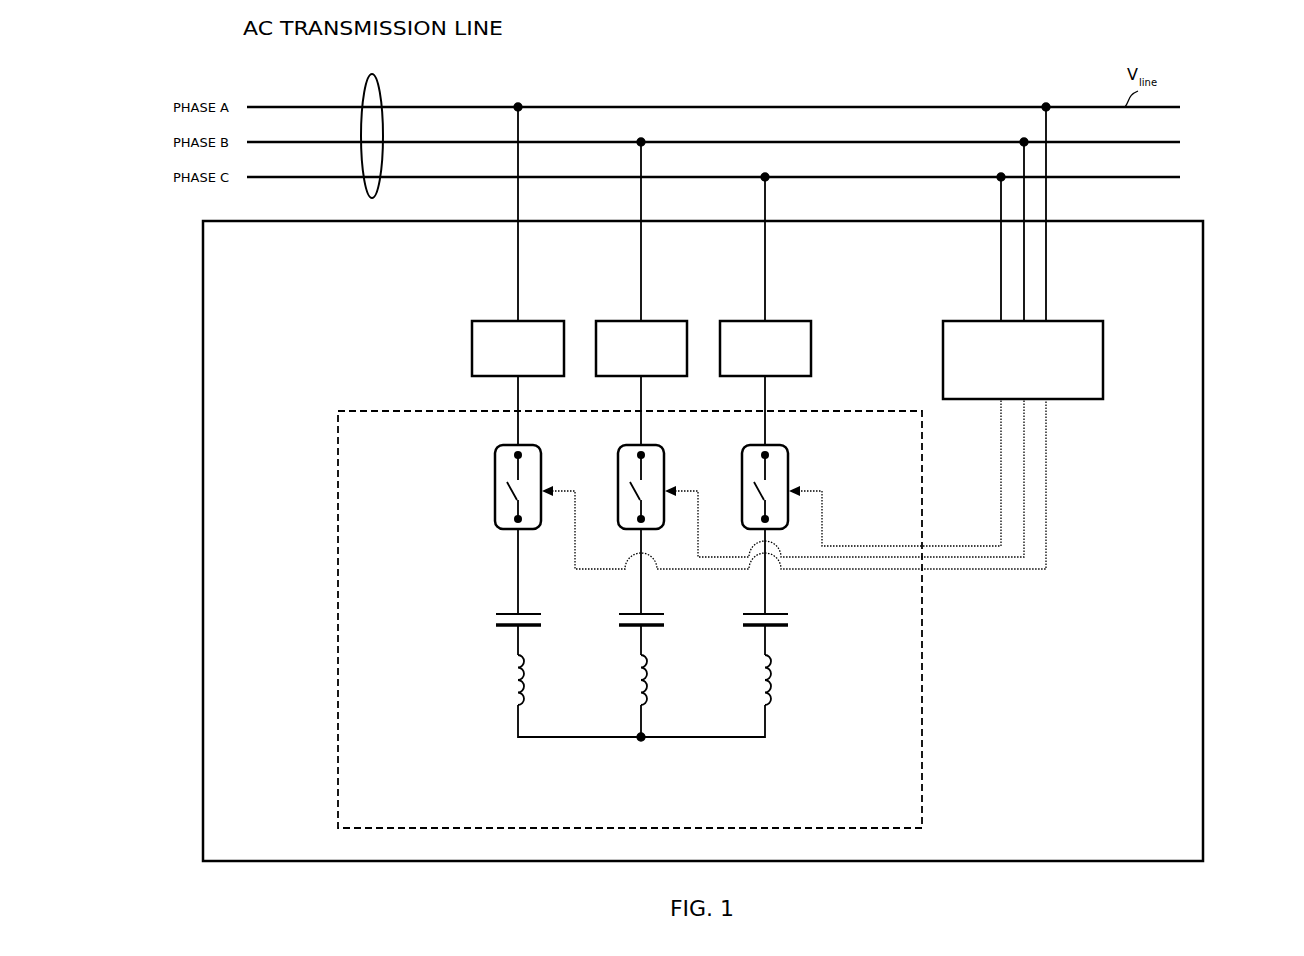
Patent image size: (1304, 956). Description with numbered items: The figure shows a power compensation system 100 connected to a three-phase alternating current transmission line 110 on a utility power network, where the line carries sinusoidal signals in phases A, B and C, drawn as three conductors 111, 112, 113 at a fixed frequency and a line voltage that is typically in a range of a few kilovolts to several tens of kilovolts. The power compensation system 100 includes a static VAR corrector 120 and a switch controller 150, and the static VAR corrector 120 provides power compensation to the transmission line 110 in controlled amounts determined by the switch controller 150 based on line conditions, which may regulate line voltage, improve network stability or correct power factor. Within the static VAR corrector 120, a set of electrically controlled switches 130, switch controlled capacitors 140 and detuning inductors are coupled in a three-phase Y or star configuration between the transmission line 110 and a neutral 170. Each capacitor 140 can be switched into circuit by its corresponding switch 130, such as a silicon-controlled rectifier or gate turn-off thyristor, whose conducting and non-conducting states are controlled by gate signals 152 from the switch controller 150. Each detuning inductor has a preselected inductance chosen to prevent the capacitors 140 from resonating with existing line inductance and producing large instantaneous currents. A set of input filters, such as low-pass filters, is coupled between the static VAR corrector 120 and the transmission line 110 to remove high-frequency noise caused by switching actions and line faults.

The power compensation system 100 is at (1205, 253).
The AC transmission line 110 is at (382, 103).
The phase A line 111 is at (260, 107).
The phase B line 112 is at (260, 142).
The phase C line 113 is at (260, 177).
The static VAR corrector 120 is at (553, 321).
The electrically controlled switch 130 is at (542, 453).
The switch controlled capacitor 140 is at (530, 613).
The switch controller 150 is at (528, 680).
The gate signals 152 is at (1047, 490).
The neutral 170 is at (643, 740).